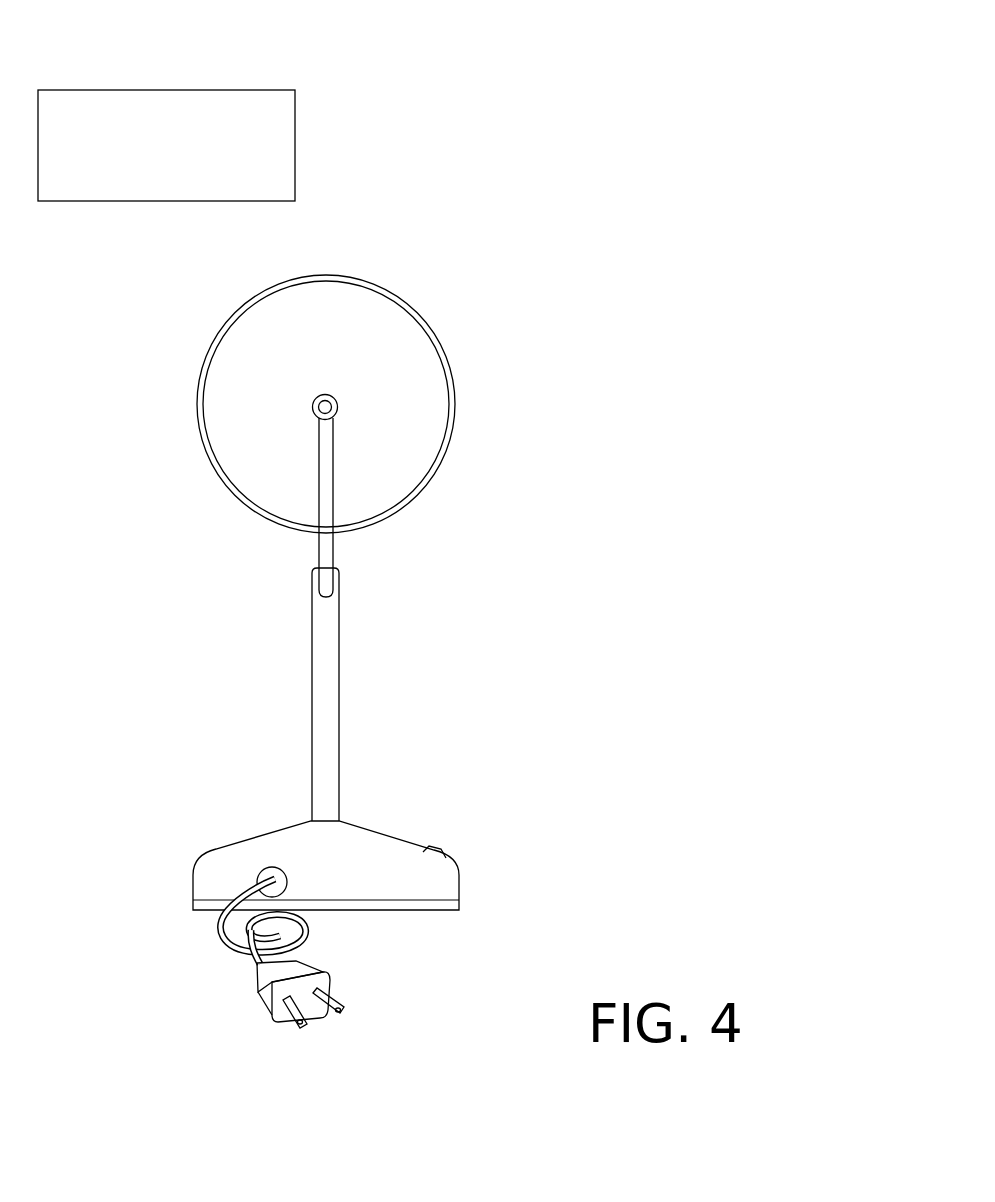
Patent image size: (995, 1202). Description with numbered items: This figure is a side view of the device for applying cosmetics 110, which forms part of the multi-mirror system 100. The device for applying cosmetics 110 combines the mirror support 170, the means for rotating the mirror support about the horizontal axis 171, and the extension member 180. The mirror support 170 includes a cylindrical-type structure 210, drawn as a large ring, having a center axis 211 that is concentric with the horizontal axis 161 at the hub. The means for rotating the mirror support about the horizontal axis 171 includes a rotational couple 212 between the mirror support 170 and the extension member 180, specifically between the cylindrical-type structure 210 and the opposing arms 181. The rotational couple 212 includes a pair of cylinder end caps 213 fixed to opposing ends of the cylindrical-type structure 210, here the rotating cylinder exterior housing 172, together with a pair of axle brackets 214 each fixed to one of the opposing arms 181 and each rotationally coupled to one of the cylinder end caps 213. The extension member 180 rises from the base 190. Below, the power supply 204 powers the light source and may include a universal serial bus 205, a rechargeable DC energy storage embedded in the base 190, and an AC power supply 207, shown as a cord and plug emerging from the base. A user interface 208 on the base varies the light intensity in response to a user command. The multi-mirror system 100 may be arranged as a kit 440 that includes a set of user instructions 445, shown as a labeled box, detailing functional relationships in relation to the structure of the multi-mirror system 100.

The multi-mirror system 100 is at (537, 88).
The device for applying cosmetics 110 is at (552, 122).
The kit 440 is at (573, 152).
The user instructions 445 is at (262, 130).
The mirror support 170 is at (308, 272).
The rotating cylinder exterior housing 172 is at (332, 277).
The cylinder end caps 213 is at (342, 328).
The cylindrical-type structure 210 is at (335, 403).
The means for rotating the mirror support about the horizontal axis 171 is at (315, 402).
The center axis 211 is at (335, 396).
The horizontal axis 161 is at (338, 398).
The axle brackets 214 is at (347, 410).
The rotational couple 212 is at (337, 413).
The opposing arms 181 is at (334, 513).
The extension member 180 is at (294, 619).
The base 190 is at (345, 848).
The user interface 208 is at (443, 847).
The universal serial bus (USB) 205 is at (188, 890).
The power supply 204 is at (333, 890).
The AC power supply 207 is at (220, 933).